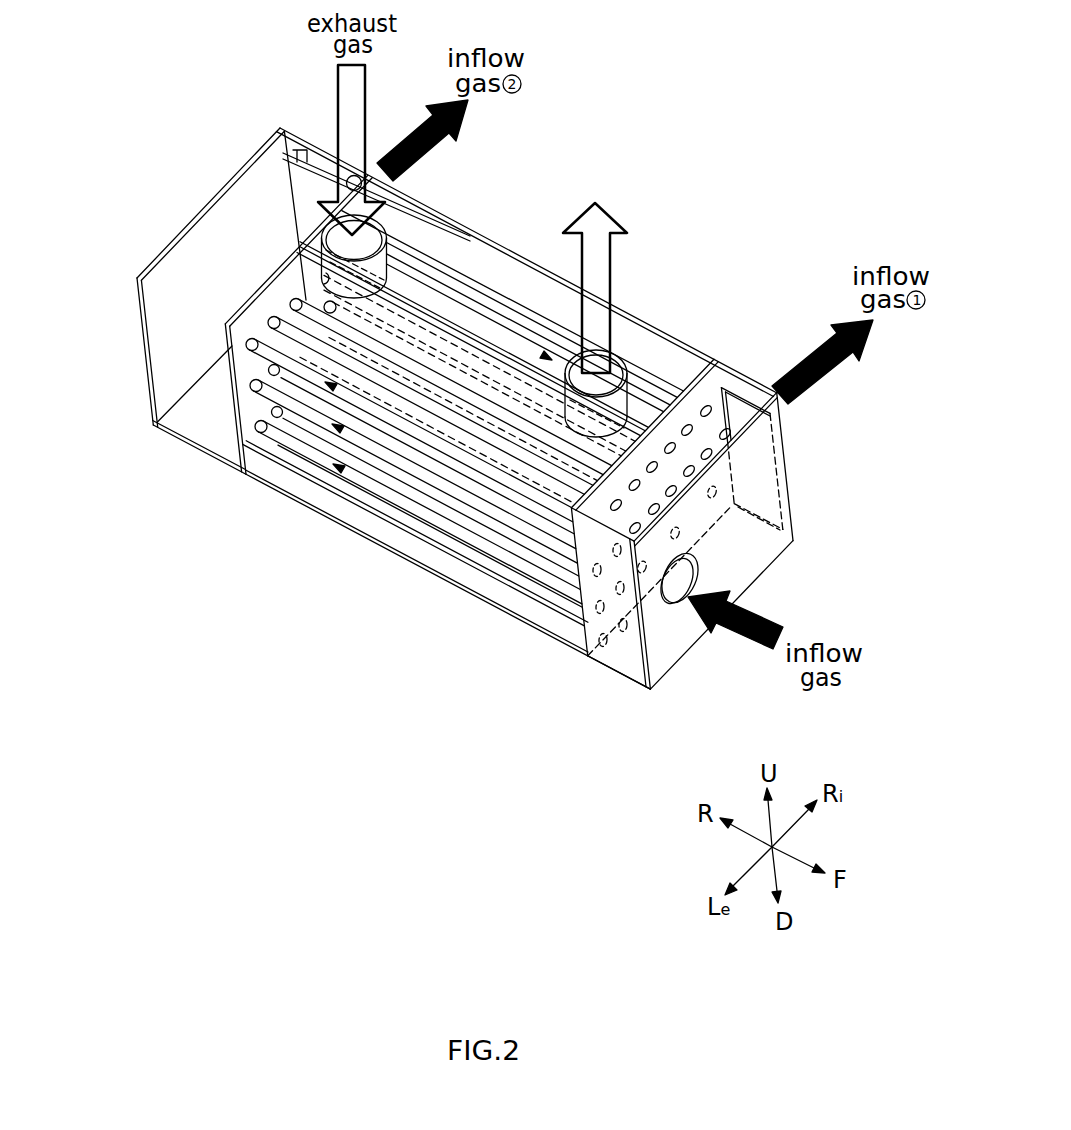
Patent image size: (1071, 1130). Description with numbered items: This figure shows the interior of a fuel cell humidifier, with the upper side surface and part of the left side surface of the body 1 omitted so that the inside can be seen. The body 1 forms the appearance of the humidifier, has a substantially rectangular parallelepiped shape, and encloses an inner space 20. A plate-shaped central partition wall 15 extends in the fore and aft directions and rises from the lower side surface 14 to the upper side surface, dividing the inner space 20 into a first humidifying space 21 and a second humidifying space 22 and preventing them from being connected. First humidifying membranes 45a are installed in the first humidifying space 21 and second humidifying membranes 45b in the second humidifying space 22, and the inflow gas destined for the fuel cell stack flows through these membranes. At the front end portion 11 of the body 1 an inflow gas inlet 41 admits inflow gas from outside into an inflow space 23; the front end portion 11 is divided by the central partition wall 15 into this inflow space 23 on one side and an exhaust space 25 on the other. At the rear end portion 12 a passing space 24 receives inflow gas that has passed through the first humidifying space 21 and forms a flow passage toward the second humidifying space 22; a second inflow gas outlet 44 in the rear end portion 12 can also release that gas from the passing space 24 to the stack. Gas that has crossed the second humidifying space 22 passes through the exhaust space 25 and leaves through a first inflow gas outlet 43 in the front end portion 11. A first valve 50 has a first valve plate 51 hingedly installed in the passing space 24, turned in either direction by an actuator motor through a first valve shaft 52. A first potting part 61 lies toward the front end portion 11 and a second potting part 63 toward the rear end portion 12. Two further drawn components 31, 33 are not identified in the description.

The body 1 is at (100, 346).
The front end portion 11 is at (748, 572).
The rear end portion 12 is at (157, 257).
The lower side surface 14 is at (450, 572).
The central partition wall 15 is at (308, 232).
The inner space 20 is at (170, 860).
The first humidifying space 21 is at (346, 508).
The second humidifying space 22 is at (516, 286).
The inflow space 23 is at (615, 664).
The passing space 24 is at (200, 430).
The exhaust space 25 is at (768, 555).
The exhaust gas inlet duct 31 is at (405, 250).
The exhaust gas outlet duct 33 is at (632, 362).
The inflow gas inlet 41 is at (672, 600).
The first inflow gas outlet 43 is at (740, 403).
The second inflow gas outlet 44 is at (303, 158).
The first humidifying membranes 45a is at (310, 450).
The second humidifying membranes 45b is at (453, 277).
The first valve 50 is at (302, 782).
The first valve plate 51 is at (275, 167).
The first valve shaft 52 is at (357, 178).
The first potting part 61 is at (693, 373).
The second potting part 63 is at (262, 298).